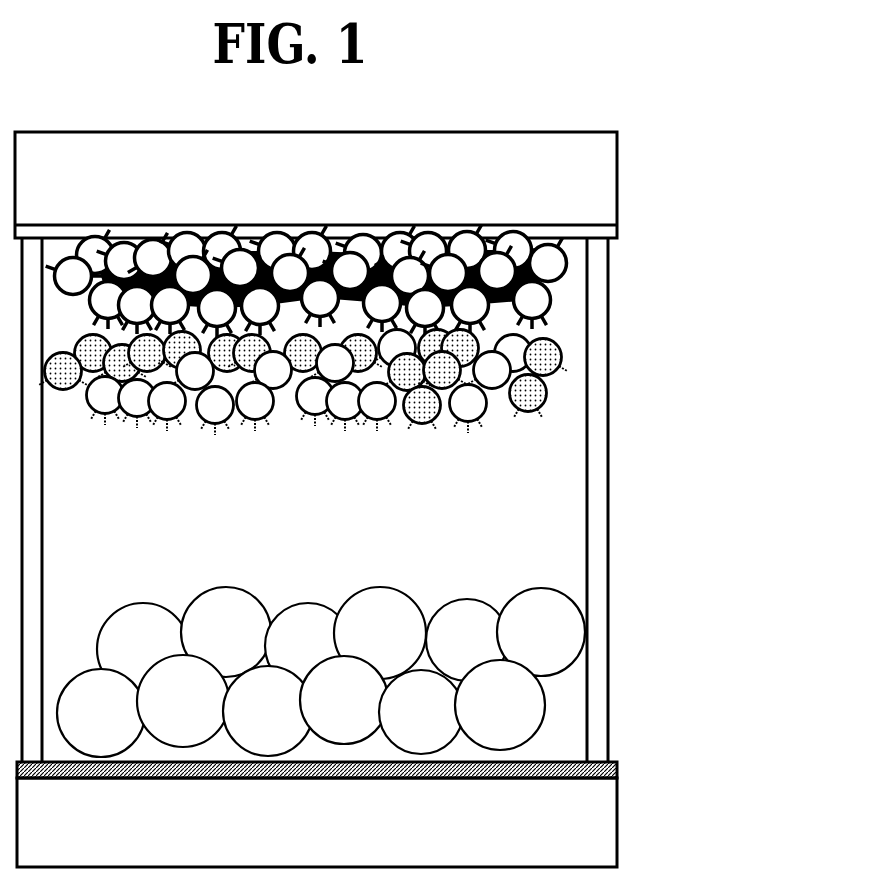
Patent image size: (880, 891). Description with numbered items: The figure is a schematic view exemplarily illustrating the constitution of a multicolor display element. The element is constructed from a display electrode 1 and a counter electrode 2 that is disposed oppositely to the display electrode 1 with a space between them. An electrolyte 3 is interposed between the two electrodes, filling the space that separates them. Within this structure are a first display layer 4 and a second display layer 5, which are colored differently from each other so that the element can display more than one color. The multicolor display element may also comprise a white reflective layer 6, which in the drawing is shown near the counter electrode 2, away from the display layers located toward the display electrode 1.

The display electrode 1 is at (560, 181).
The counter electrode 2 is at (535, 815).
The electrolyte 3 is at (397, 520).
The first display layer 4 is at (530, 290).
The second display layer 5 is at (548, 400).
The white reflective layer 6 is at (460, 654).